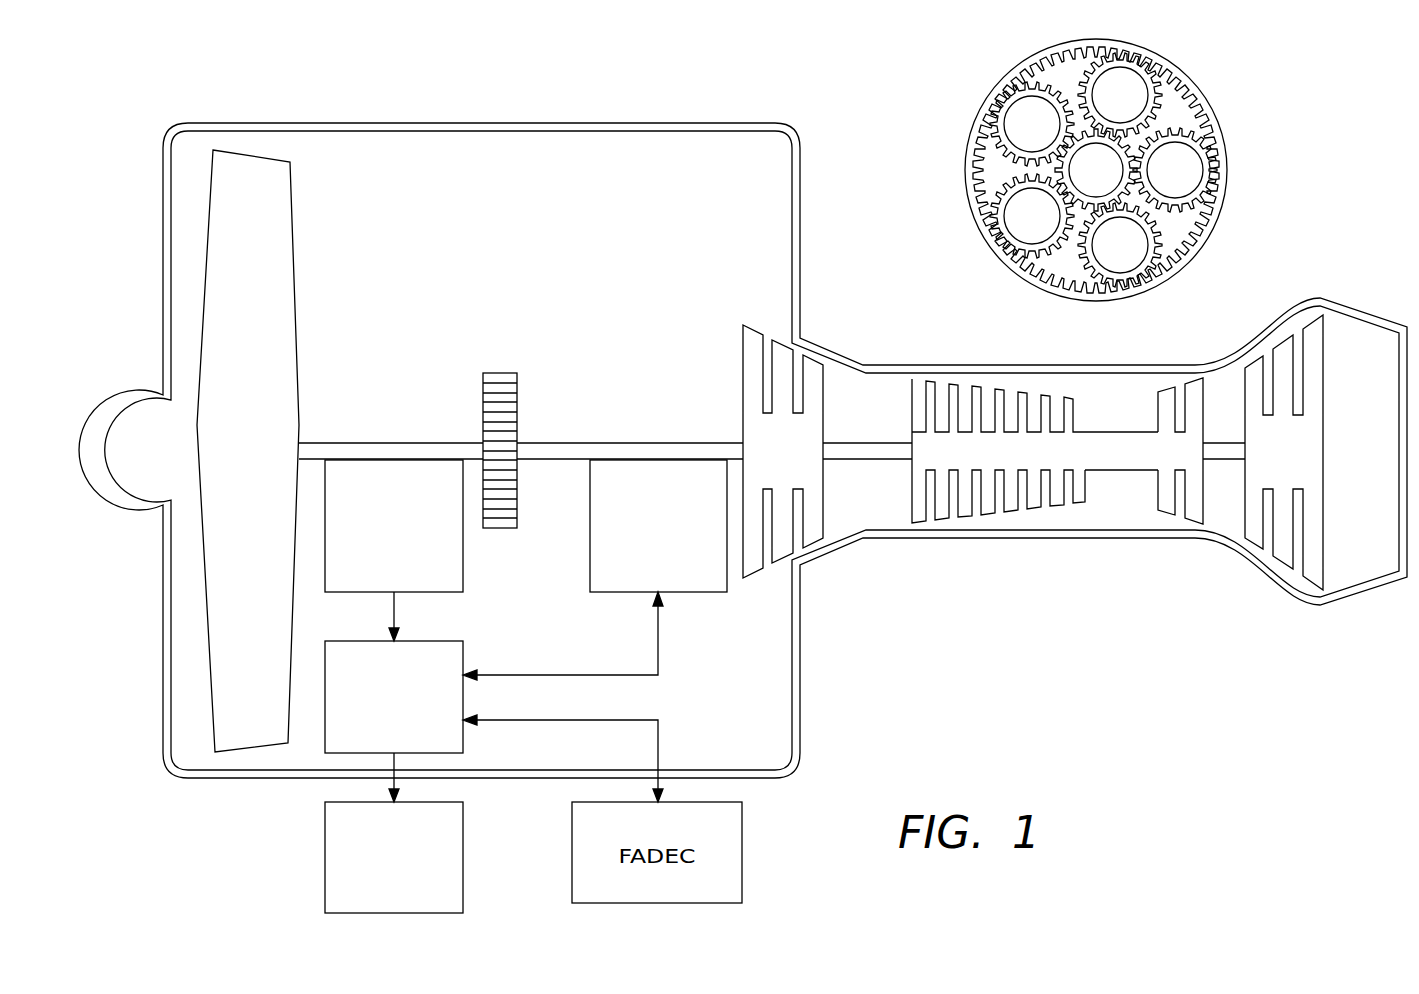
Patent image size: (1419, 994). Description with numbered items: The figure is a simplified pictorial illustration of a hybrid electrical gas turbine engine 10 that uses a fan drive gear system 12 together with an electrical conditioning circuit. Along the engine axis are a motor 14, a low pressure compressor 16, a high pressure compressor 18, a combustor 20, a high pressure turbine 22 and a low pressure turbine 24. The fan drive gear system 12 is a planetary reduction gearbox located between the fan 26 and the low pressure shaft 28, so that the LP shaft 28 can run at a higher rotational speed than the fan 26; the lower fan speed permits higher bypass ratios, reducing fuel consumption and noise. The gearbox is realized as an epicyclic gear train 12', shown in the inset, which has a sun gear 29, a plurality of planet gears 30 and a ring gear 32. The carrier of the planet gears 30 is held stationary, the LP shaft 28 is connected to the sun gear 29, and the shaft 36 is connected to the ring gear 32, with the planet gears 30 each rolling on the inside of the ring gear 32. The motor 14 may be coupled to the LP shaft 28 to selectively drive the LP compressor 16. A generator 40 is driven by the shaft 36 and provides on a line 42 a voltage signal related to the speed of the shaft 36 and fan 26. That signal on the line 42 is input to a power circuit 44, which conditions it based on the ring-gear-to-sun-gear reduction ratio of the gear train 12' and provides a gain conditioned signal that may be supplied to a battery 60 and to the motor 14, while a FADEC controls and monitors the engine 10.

The hybrid electrical gas turbine engine 10 is at (803, 103).
The fan drive gear system 12 is at (511, 405).
The epicyclic gear train 12' is at (1130, 164).
The motor 14 is at (700, 595).
The low pressure compressor 16 is at (812, 368).
The high pressure compressor 18 is at (987, 400).
The combustor 20 is at (1118, 470).
The high pressure turbine 22 is at (1167, 397).
The low pressure turbine 24 is at (1280, 350).
The fan 26 is at (262, 186).
The low pressure shaft 28 is at (643, 445).
The sun gear 29 is at (1115, 130).
The planet gears 30 is at (1004, 100).
The ring gear 32 is at (1226, 167).
The shaft 36 is at (362, 445).
The generator 40 is at (465, 555).
The line 42 is at (394, 610).
The power circuit 44 is at (463, 693).
The battery 60 is at (325, 855).